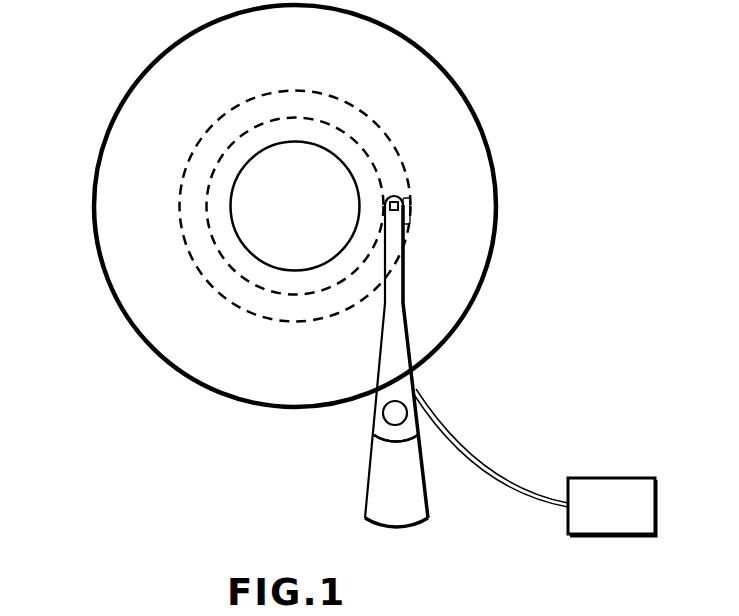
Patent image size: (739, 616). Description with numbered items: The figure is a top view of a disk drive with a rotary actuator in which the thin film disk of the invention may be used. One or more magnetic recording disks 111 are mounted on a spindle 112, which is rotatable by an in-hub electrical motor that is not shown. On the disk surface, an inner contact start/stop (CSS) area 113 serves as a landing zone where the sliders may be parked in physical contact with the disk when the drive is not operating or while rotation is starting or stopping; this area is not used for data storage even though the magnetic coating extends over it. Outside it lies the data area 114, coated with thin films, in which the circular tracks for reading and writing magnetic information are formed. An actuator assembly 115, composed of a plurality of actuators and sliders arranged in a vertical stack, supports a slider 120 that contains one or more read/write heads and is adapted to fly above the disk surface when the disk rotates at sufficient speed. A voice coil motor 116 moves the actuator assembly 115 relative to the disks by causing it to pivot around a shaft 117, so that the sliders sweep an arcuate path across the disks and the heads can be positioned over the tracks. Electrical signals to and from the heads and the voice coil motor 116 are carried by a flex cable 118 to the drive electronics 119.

The magnetic recording disk 111 is at (152, 65).
The spindle 112 is at (245, 203).
The contact start/stop (CSS) area 113 is at (383, 150).
The data area 114 is at (428, 75).
The actuator assembly 115 is at (397, 317).
The voice coil motor (VCM) 116 is at (365, 487).
The shaft 117 is at (390, 414).
The flex cable 118 is at (483, 468).
The drive electronics 119 is at (613, 478).
The slider 120 is at (407, 203).